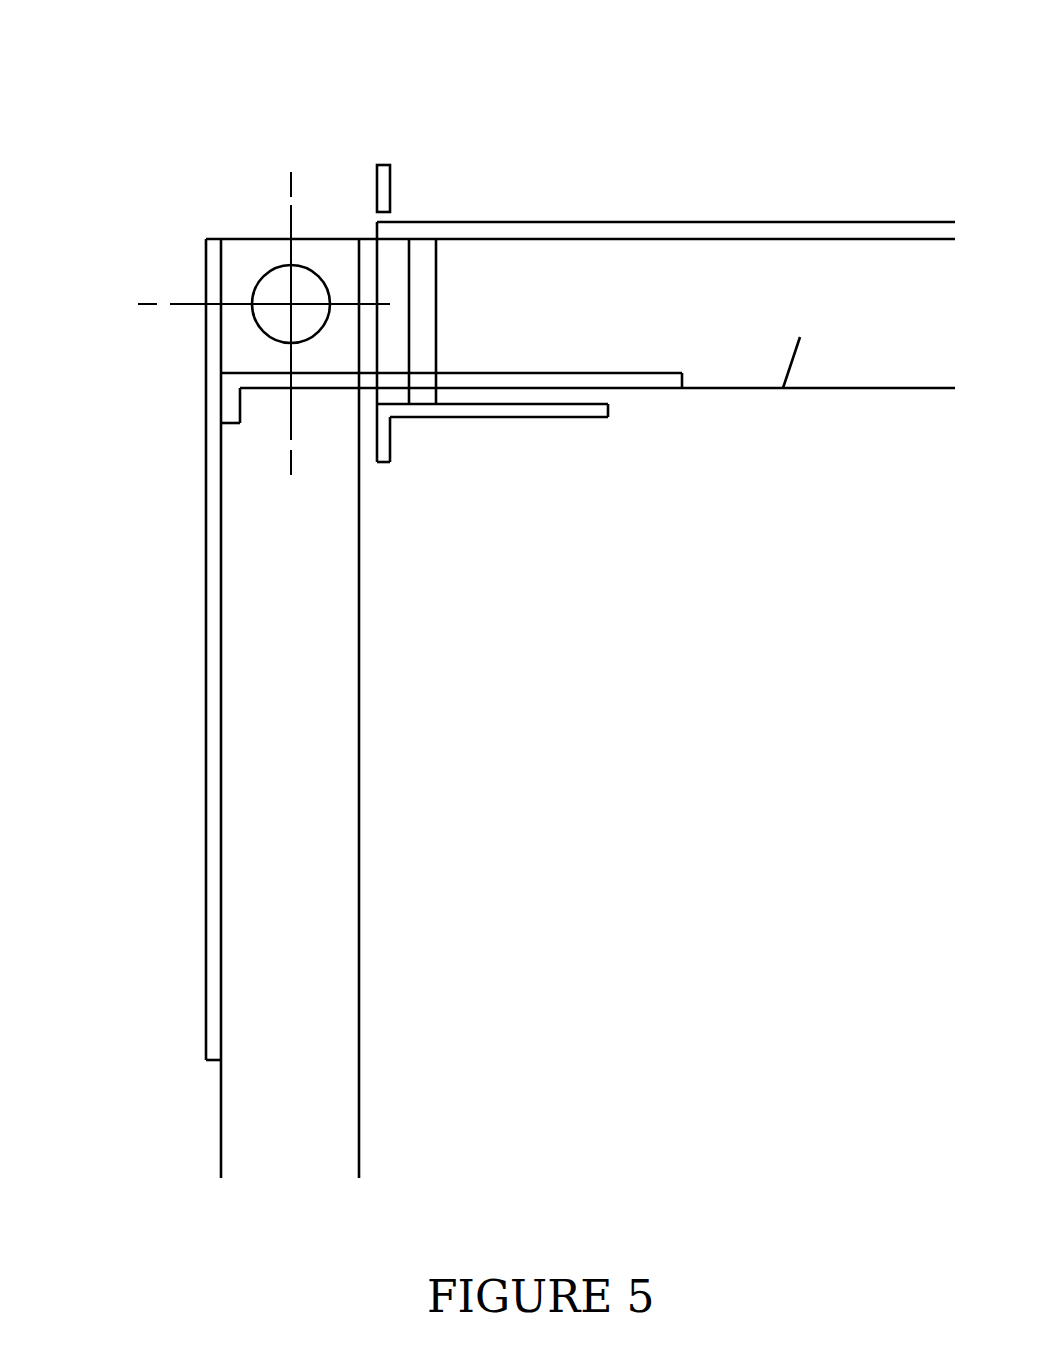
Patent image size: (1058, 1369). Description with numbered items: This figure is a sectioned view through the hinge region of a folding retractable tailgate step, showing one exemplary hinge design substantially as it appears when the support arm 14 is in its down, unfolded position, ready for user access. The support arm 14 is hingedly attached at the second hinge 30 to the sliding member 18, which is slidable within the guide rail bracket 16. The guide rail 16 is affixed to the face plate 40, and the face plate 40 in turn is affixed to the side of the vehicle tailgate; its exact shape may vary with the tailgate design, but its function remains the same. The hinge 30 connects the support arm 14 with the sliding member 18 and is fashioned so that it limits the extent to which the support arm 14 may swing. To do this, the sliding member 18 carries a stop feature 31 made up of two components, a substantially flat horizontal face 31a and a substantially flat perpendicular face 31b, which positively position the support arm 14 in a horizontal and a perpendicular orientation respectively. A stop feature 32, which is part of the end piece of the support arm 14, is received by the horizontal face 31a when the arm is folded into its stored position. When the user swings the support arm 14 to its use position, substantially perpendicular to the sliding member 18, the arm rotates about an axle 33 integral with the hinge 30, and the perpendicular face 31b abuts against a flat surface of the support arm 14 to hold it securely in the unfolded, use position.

The support arm 14 is at (360, 825).
The guide rail bracket 16 is at (852, 222).
The sliding member 18 is at (800, 337).
The second hinge 30 is at (218, 215).
The stop feature 31 is at (546, 372).
The horizontal face 31a is at (308, 239).
The perpendicular face 31b is at (222, 403).
The stop feature 32 is at (205, 525).
The axle 33 is at (291, 304).
The face plate 40 is at (390, 165).